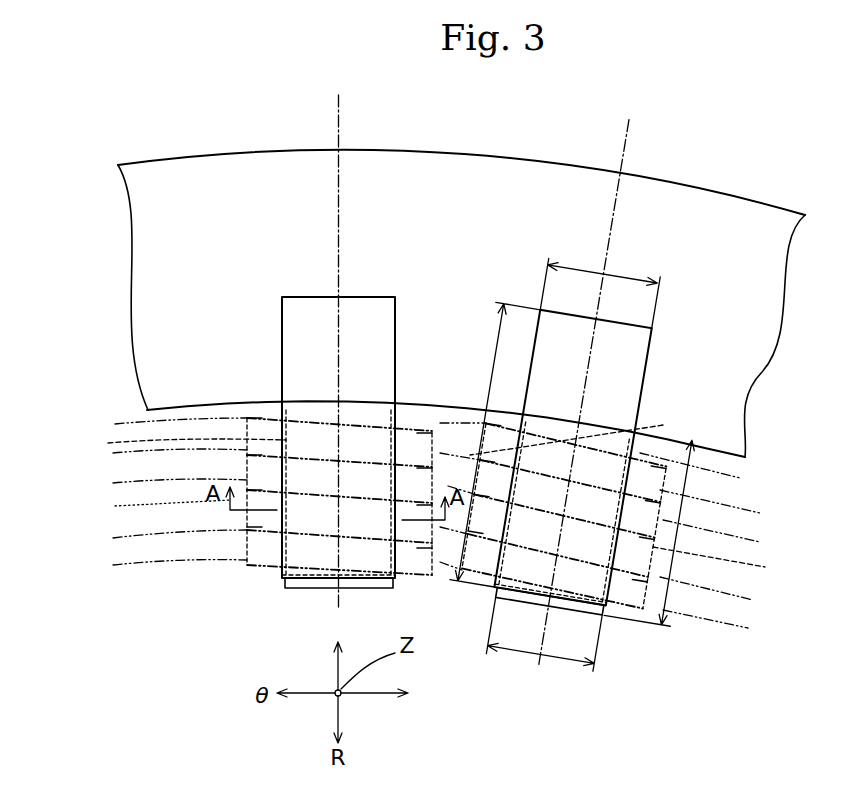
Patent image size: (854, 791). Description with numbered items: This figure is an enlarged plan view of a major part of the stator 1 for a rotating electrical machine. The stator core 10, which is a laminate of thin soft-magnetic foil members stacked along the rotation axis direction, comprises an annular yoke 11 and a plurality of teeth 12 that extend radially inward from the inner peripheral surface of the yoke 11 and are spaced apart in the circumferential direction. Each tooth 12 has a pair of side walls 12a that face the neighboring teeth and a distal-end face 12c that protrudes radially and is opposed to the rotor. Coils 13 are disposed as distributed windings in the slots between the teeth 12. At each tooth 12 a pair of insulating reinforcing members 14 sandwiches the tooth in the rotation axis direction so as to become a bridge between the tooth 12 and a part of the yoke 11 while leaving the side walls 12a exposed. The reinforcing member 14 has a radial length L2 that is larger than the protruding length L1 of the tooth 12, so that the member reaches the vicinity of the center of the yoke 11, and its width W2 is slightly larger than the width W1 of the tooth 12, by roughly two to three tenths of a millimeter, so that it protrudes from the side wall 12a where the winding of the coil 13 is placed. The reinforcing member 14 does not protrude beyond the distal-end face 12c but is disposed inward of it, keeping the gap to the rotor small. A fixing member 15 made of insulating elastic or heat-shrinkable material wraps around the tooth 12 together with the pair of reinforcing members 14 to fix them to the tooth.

The stator for rotating electrical machine 1 is at (466, 85).
The stator core 10 is at (697, 177).
The yoke 11 is at (263, 178).
The tooth 12 is at (285, 590).
The side wall 12a is at (436, 494).
The distal-end face 12c is at (367, 588).
The coil 13 is at (277, 510).
The reinforcing member 14 is at (300, 321).
The fixing member 15 is at (383, 423).
The protruding length of tooth L1 is at (687, 487).
The length of reinforcing member L2 is at (493, 375).
The width of tooth W1 is at (560, 662).
The width of reinforcing member W2 is at (613, 273).